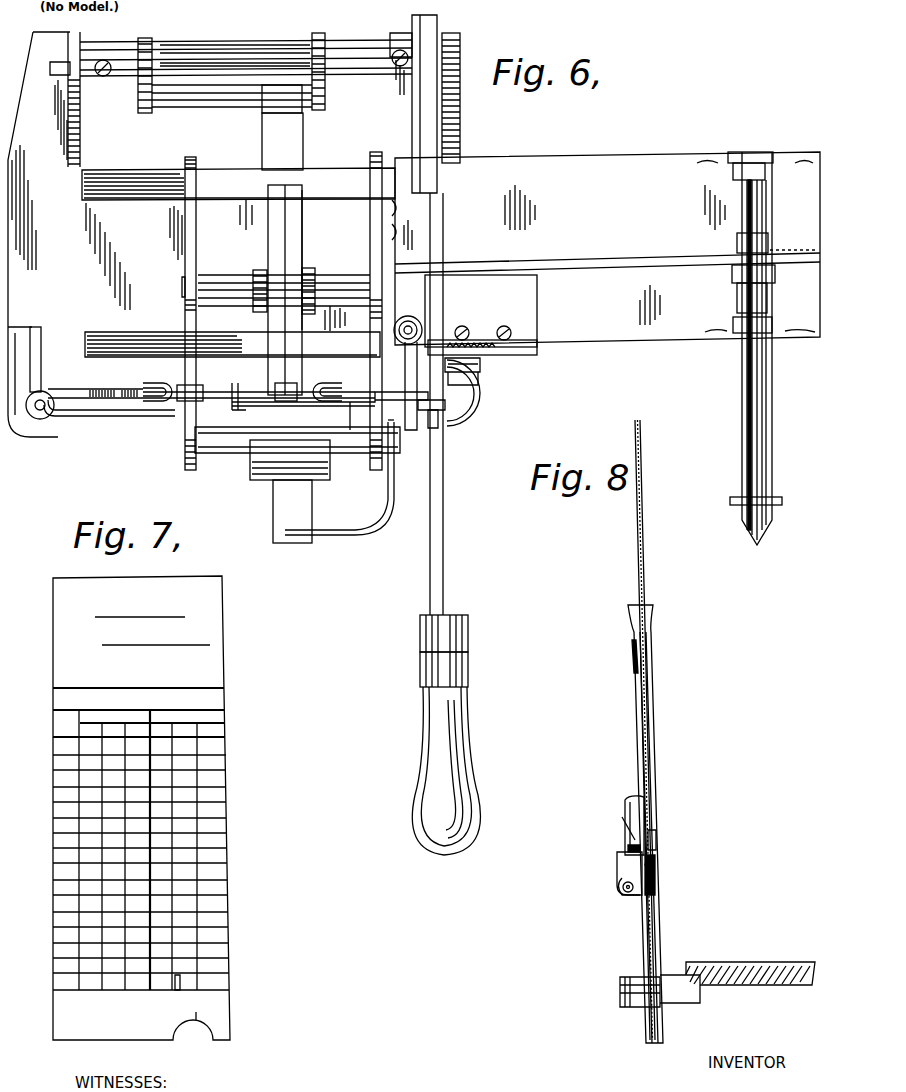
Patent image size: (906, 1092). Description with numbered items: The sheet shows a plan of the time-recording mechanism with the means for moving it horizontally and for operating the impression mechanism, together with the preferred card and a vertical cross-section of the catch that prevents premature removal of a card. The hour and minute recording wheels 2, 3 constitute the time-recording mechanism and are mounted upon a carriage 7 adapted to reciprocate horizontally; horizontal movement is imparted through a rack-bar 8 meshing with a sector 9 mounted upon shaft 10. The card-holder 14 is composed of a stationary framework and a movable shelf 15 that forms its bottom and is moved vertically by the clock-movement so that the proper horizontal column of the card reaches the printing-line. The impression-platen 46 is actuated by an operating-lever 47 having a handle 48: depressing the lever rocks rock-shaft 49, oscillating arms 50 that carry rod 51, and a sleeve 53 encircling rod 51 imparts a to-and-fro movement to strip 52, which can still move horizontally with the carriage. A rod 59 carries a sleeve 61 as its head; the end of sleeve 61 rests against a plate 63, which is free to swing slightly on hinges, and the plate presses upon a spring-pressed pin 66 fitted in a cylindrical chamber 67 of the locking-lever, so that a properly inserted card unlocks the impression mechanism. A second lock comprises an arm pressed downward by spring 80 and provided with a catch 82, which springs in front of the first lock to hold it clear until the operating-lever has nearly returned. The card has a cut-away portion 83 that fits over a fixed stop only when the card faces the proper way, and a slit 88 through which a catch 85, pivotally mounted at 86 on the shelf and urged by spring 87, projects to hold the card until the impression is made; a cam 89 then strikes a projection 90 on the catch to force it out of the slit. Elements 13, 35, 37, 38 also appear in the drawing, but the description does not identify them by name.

In FIG. 6, the hour recording wheel 2 is at (302, 205).
In FIG. 6, the minute recording wheel 3 is at (268, 202).
In FIG. 6, the carriage 7 is at (187, 260).
In FIG. 6, the rack-bar 8 is at (590, 262).
In FIG. 6, the sector 9 is at (730, 250).
In FIG. 6, the shaft 10 is at (772, 388).
In FIG. 7, the time card 13 is at (218, 758).
In FIG. 8, the time card 13 is at (643, 560).
In FIG. 6, the card-holder 14 is at (178, 386).
In FIG. 8, the card-holder 14 is at (655, 622).
In FIG. 8, the shelf 15 is at (652, 874).
In FIG. 6, the slide block 35 is at (235, 390).
In FIG. 6, the rack bar 37 is at (55, 425).
In FIG. 6, the lever 38 is at (36, 420).
In FIG. 6, the impression-platen 46 is at (290, 491).
In FIG. 6, the operating-lever 47 is at (445, 508).
In FIG. 6, the handle 48 is at (446, 735).
In FIG. 6, the rock-shaft 49 is at (340, 48).
In FIG. 6, the arms 50 is at (140, 96).
In FIG. 6, the rod 51 is at (210, 106).
In FIG. 6, the strip 52 is at (282, 141).
In FIG. 6, the sleeve 53 is at (264, 111).
In FIG. 6, the rod 59 is at (352, 440).
In FIG. 6, the sleeve 61 is at (422, 412).
In FIG. 6, the plate 63 is at (406, 368).
In FIG. 6, the spring-pressed pin 66 is at (433, 422).
In FIG. 6, the cylindrical chamber 67 is at (468, 398).
In FIG. 6, the spring 80 is at (492, 338).
In FIG. 6, the catch 82 is at (470, 340).
In FIG. 7, the cut-away portion 83 is at (196, 1030).
In FIG. 8, the catch 85 is at (630, 800).
In FIG. 8, the pivot 86 is at (622, 890).
In FIG. 8, the spring 87 is at (617, 866).
In FIG. 7, the slit 88 is at (182, 980).
In FIG. 8, the cam 89 is at (617, 843).
In FIG. 8, the projection 90 is at (620, 822).